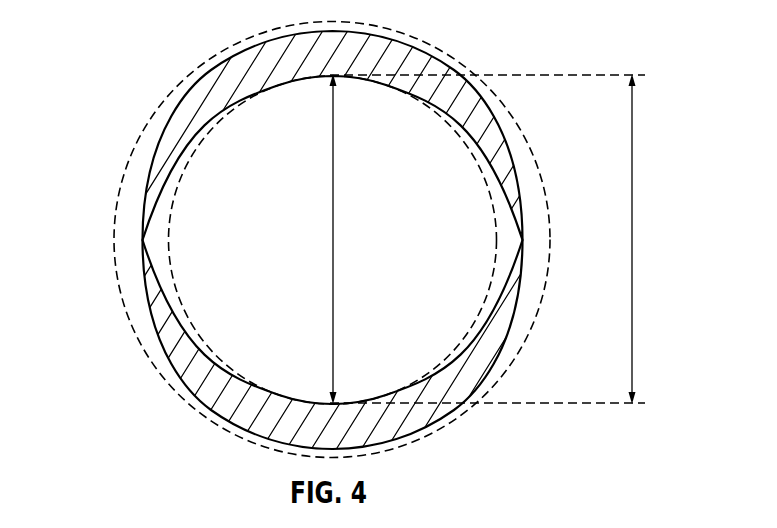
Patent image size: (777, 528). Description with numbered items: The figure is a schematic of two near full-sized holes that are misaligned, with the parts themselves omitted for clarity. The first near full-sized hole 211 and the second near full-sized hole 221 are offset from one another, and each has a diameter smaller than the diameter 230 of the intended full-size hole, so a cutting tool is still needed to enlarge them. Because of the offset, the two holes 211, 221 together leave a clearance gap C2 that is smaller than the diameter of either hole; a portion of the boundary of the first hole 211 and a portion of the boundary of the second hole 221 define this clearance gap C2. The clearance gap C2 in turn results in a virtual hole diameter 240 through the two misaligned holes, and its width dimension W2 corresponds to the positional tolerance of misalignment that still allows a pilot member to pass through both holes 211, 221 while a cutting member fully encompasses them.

The first near full-sized hole 211 is at (457, 118).
The second near full-sized hole 221 is at (190, 340).
The diameter of intended full-size hole 230 is at (113, 222).
The virtual hole diameter 240 is at (480, 168).
The clearance gap C2 is at (333, 240).
The width dimension of clearance gap W2 is at (632, 240).